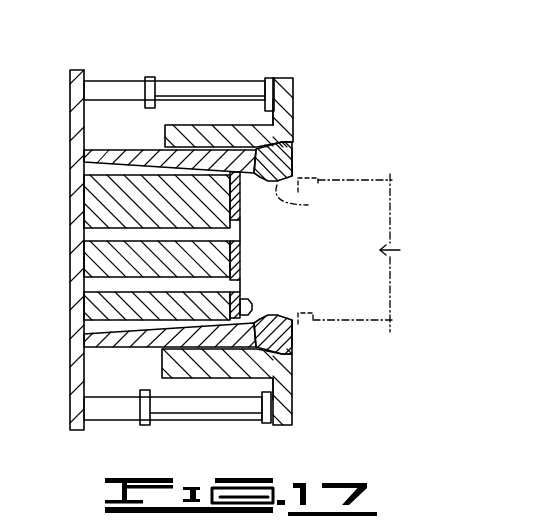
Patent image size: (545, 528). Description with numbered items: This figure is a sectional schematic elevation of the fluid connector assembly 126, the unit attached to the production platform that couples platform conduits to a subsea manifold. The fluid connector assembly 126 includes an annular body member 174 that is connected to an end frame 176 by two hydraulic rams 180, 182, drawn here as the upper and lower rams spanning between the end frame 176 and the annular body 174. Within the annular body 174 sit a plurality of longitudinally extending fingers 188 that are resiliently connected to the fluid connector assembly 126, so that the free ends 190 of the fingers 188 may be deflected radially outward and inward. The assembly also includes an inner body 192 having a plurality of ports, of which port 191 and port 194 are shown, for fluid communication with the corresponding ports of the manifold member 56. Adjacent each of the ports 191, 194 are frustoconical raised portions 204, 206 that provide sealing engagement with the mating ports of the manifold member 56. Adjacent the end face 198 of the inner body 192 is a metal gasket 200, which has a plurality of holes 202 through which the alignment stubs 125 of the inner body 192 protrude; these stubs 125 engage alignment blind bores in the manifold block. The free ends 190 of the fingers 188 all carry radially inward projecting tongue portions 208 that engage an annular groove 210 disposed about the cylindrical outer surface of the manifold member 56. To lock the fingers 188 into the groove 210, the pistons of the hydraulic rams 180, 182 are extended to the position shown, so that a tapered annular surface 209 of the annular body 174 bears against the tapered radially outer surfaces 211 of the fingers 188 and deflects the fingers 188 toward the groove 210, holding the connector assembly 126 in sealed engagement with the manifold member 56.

The manifold member 56 is at (373, 172).
The alignment stubs 125 is at (283, 342).
The fluid connector assembly 126 is at (0, 147).
The annular body member 174 is at (291, 93).
The end frame 176 is at (72, 88).
The hydraulic ram 180 is at (193, 88).
The hydraulic ram 182 is at (202, 407).
The longitudinally extending fingers 188 is at (281, 149).
The free ends of fingers 190 is at (296, 167).
The port 191 is at (100, 242).
The inner body 192 is at (97, 192).
The port 194 is at (100, 288).
The end face 198 is at (241, 208).
The metal gasket 200 is at (243, 250).
The holes 202 is at (253, 303).
The frustoconical raised portion 204 is at (241, 229).
The frustoconical raised portion 206 is at (241, 269).
The tongue portions 208 is at (300, 194).
The tapered annular surface 209 is at (296, 350).
The annular groove 210 is at (309, 200).
The tapered radially outer surfaces 211 is at (283, 121).